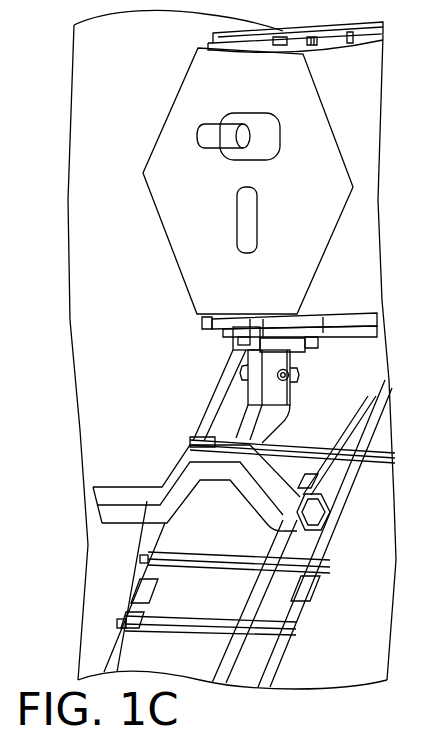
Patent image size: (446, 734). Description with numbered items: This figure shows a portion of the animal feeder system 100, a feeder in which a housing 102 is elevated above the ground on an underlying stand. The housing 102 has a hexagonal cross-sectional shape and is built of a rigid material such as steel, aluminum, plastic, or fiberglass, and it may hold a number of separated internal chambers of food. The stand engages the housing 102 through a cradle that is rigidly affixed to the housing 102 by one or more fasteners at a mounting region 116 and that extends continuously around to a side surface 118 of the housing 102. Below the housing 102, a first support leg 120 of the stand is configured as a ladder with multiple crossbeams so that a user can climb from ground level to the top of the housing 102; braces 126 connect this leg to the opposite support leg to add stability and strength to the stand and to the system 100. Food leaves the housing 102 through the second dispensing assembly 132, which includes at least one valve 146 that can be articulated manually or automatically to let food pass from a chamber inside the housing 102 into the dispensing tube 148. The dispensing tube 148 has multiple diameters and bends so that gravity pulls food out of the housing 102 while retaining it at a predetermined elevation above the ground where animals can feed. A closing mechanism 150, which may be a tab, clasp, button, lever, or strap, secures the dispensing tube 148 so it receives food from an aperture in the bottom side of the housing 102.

The animal feeder system 100 is at (107, 48).
The housing 102 is at (200, 194).
The mounting region 116 is at (380, 333).
The side surface 118 is at (372, 106).
The first support leg 120 is at (128, 582).
The braces 126 is at (375, 462).
The second dispensing assembly 132 is at (178, 445).
The valve 146 is at (305, 388).
The dispensing tube 148 is at (112, 486).
The closing mechanism 150 is at (232, 343).